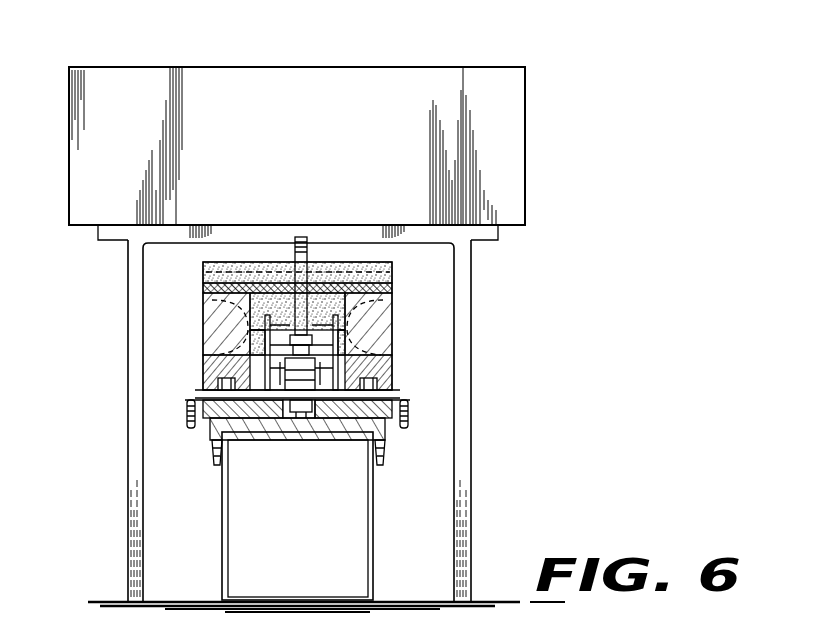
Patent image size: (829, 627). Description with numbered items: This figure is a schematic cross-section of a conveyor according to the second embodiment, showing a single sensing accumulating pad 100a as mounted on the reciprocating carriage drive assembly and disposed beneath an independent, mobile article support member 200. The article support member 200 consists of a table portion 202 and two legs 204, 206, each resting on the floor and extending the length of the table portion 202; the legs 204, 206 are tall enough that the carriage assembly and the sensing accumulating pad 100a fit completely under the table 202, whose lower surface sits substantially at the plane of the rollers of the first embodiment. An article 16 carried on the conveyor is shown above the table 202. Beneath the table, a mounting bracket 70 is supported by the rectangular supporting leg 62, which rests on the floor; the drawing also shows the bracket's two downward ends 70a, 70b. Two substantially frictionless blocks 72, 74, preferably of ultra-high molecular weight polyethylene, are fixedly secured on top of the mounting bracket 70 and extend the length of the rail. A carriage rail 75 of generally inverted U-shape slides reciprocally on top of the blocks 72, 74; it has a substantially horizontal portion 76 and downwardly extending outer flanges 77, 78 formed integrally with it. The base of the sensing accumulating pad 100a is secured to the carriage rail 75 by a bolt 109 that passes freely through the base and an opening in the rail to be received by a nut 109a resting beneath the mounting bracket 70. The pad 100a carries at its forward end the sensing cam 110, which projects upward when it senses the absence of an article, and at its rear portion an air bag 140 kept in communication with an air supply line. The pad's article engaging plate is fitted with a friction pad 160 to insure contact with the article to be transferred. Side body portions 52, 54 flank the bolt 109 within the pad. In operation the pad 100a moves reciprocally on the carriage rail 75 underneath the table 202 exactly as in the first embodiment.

The article 16 is at (300, 134).
The table portion 202 is at (275, 229).
The article support member 200 is at (309, 421).
The leg 204 is at (128, 328).
The leg 206 is at (465, 409).
The sensing accumulating pad 100a is at (180, 293).
The friction pad 160 is at (204, 271).
The air bag 140 is at (396, 300).
The left body block 52 is at (206, 312).
The right body block 54 is at (390, 360).
The bolt 109 is at (280, 341).
The sensing cam 110 is at (305, 240).
The substantially frictionless block 72 is at (212, 392).
The substantially frictionless block 74 is at (393, 400).
The outer flange 77 is at (189, 414).
The outer flange 78 is at (402, 412).
The carriage rail 75 is at (258, 410).
The nut 109a is at (302, 414).
The horizontal portion 76 is at (338, 410).
The mounting bracket 70 is at (303, 453).
The left cap finger 70a is at (222, 446).
The right cap finger 70b is at (380, 446).
The supporting leg 62 is at (266, 598).